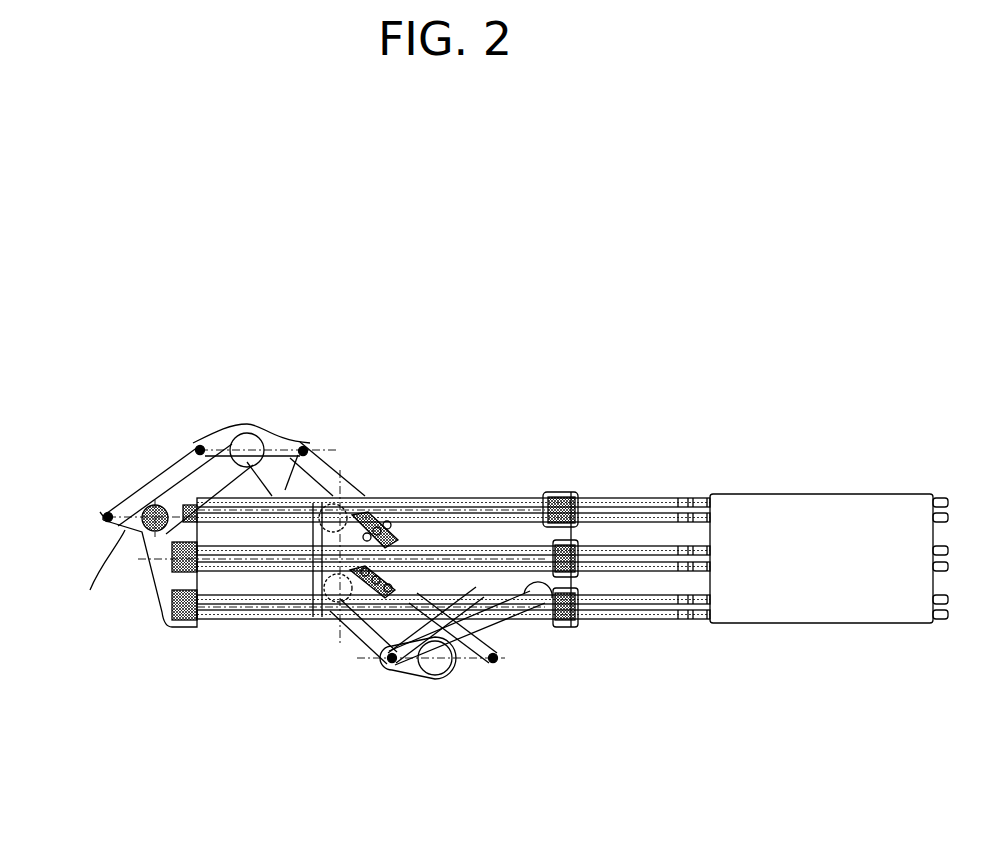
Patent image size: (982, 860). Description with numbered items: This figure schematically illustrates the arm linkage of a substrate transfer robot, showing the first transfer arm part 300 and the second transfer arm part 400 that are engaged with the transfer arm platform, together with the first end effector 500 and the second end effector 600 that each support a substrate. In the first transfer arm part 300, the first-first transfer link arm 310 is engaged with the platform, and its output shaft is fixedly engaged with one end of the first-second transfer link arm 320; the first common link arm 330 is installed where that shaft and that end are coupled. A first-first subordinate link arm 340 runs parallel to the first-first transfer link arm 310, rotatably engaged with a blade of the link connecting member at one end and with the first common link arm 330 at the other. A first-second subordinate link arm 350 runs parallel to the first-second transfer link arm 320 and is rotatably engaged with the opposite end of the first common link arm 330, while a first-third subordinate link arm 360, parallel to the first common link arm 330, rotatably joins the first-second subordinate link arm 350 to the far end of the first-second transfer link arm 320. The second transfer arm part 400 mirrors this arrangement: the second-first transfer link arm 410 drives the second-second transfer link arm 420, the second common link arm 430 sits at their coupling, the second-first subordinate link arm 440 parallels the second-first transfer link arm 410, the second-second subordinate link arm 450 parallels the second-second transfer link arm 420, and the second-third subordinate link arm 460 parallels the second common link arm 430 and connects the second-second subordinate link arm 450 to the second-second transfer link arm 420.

The first transfer arm part 300 is at (433, 690).
The (1_1)-st transfer link arm 310 is at (350, 630).
The (1_2)-nd transfer link arm 320 is at (507, 632).
The first common link arm 330 is at (472, 680).
The (1_1)-st subordinate link arm 340 is at (386, 664).
The (1_2)-nd subordinate link arm 350 is at (483, 665).
The (1_3)-rd subordinate link arm 360 is at (507, 588).
The second transfer arm part 400 is at (225, 427).
The (2_1)-st transfer link arm 410 is at (323, 450).
The (2_2)-nd transfer link arm 420 is at (172, 472).
The second common link arm 430 is at (283, 450).
The (2_1)-st subordinate link arm 440 is at (357, 495).
The (2_2)-nd subordinate link arm 450 is at (186, 452).
The (2_3)-rd subordinate link arm 460 is at (90, 590).
The first end effector 500 is at (560, 490).
The second end effector 600 is at (157, 603).